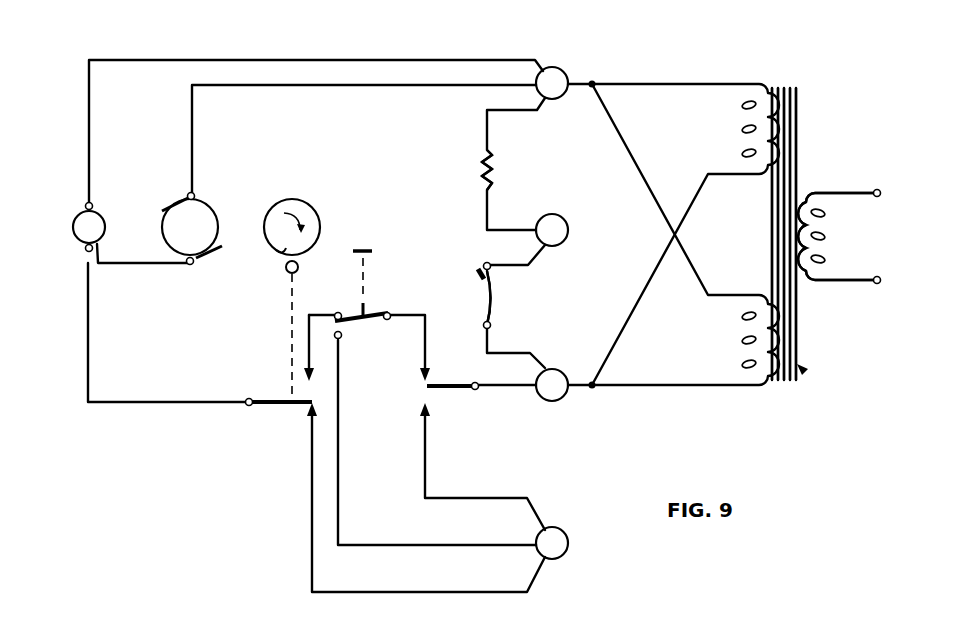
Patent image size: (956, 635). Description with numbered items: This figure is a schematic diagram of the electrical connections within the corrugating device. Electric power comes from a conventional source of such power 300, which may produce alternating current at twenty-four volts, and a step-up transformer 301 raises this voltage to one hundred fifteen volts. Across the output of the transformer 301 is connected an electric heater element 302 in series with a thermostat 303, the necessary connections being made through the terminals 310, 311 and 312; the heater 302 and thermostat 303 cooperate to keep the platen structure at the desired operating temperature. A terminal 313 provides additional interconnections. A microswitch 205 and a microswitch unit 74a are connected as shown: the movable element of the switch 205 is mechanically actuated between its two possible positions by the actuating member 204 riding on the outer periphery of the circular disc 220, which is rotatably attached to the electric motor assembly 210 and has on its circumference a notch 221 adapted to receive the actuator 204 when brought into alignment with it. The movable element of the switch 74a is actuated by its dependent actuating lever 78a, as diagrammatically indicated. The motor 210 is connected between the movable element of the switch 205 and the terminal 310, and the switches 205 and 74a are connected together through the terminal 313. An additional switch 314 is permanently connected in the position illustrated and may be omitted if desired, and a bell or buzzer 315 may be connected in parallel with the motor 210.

The bell or buzzer 315 is at (78, 220).
The electric motor assembly 210 is at (207, 200).
The circular disc 220 is at (307, 200).
The notch 221 is at (282, 253).
The actuating member 204 is at (287, 272).
The dependent actuating lever 78a is at (358, 246).
The microswitch unit 74a is at (373, 322).
The microswitch 205 is at (291, 405).
The additional switch 314 is at (452, 391).
The terminal 310 is at (566, 68).
The electric heater element 302 is at (497, 177).
The terminal 311 is at (560, 222).
The thermostat 303 is at (493, 302).
The terminal 312 is at (560, 365).
The terminal 313 is at (563, 528).
The source of electric power 300 is at (820, 235).
The step-up transformer 301 is at (803, 370).